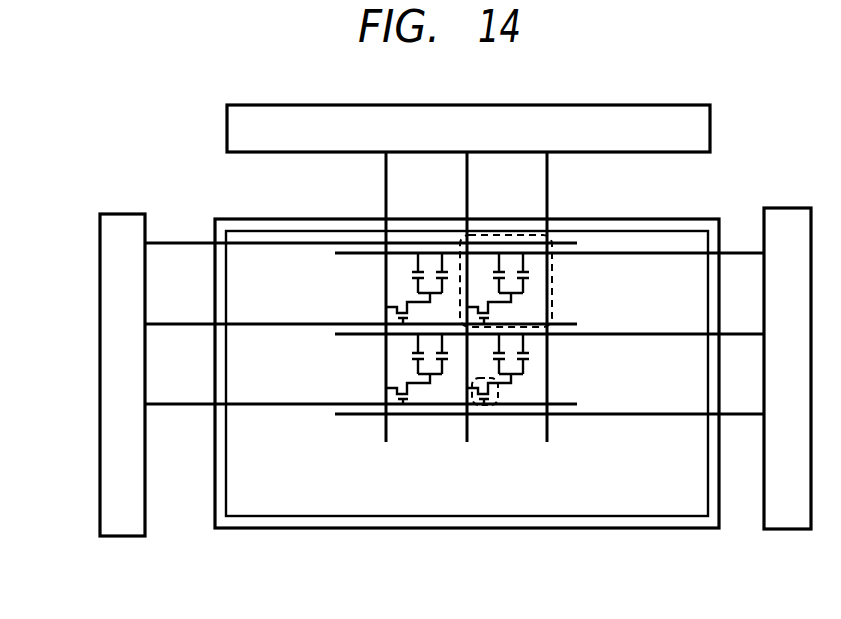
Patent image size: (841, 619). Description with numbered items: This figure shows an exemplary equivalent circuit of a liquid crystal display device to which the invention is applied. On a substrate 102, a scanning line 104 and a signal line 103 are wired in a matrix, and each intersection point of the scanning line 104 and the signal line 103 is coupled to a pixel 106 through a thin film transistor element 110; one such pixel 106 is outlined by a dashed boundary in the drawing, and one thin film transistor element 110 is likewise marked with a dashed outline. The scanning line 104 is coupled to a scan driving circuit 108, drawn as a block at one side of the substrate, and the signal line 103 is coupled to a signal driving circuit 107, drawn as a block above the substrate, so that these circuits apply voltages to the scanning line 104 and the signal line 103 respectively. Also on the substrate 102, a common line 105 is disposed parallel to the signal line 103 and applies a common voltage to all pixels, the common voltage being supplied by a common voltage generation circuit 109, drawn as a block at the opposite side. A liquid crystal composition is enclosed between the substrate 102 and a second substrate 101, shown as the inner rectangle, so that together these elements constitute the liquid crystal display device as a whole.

The substrate 101 is at (405, 500).
The substrate 102 is at (318, 530).
The signal line 103 is at (386, 178).
The scanning line 104 is at (187, 242).
The common line 105 is at (673, 252).
The pixel 106 is at (552, 263).
The signal driving circuit 107 is at (242, 131).
The scan driving circuit 108 is at (100, 250).
The common voltage generation circuit 109 is at (787, 208).
The thin film transistor element 110 is at (485, 410).